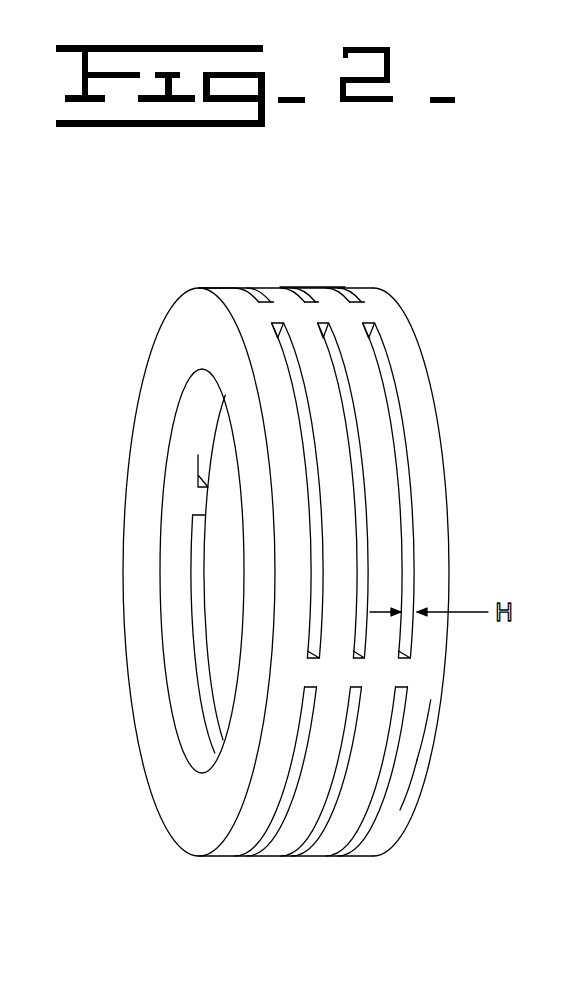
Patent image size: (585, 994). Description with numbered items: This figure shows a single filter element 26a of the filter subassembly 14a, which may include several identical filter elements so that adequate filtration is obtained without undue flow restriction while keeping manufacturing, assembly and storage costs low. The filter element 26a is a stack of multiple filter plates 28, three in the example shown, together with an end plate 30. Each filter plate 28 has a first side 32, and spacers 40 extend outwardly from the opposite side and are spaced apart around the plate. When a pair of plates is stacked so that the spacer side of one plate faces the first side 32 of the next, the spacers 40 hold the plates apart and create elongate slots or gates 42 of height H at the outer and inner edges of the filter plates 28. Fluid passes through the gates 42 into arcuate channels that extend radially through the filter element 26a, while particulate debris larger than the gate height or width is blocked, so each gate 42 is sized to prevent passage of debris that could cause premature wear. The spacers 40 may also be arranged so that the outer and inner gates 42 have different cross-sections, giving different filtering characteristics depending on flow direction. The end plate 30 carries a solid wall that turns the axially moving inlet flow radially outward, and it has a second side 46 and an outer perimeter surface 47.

The filter subassembly 14a is at (175, 867).
The filter element 26a is at (312, 257).
The filter plate 28 is at (237, 293).
The end plate 30 is at (447, 518).
The first side 32 is at (183, 797).
The spacer 40 is at (277, 287).
The gate 42 is at (403, 463).
The second side 46 is at (425, 780).
The outer perimeter surface 47 is at (415, 748).